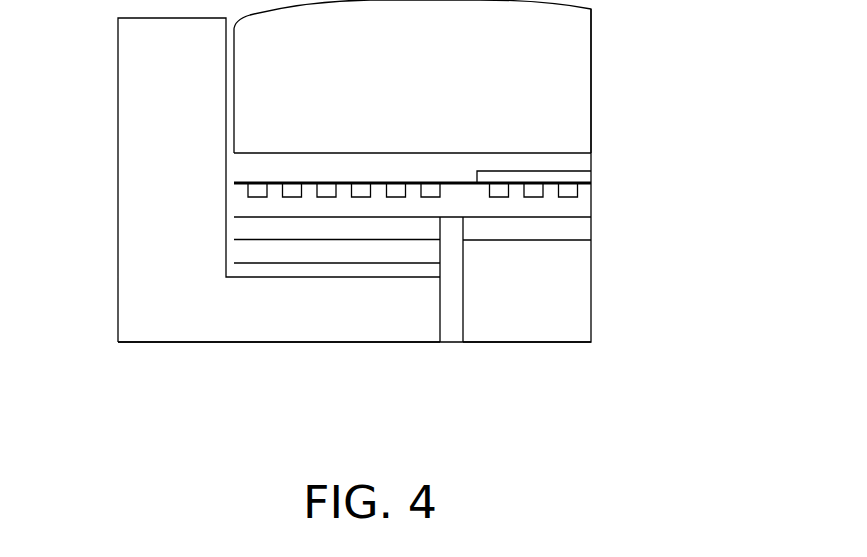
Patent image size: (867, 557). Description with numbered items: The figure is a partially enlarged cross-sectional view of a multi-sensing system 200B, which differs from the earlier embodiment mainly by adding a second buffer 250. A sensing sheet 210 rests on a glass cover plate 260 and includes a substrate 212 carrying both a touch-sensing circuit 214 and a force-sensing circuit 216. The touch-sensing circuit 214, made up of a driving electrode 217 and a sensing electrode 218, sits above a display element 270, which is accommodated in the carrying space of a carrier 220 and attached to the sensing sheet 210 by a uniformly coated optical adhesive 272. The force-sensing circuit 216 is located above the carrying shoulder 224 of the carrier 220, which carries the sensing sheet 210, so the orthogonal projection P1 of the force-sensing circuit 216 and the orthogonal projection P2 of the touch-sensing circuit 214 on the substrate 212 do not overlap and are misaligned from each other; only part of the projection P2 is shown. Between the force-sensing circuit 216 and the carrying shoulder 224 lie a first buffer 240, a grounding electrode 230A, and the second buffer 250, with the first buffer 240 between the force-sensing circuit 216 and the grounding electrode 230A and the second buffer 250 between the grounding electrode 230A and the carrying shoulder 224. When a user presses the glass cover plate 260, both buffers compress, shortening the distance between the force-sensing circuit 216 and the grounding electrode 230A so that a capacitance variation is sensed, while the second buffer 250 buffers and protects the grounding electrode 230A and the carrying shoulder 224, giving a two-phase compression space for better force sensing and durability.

The multi-sensing system 200B is at (763, 427).
The sensing sheet 210 is at (513, 167).
The substrate 212 is at (458, 182).
The touch-sensing circuit 214 is at (481, 175).
The force-sensing circuit 216 is at (440, 193).
The driving electrode 217 is at (572, 177).
The sensing electrode 218 is at (567, 190).
The carrier 220 is at (163, 307).
The carrying shoulder 224 is at (316, 307).
The grounding electrode 230A is at (250, 253).
The first buffer 240 is at (252, 229).
The second buffer 250 is at (253, 271).
The glass cover plate 260 is at (562, 44).
The display element 270 is at (552, 317).
The optical adhesive 272 is at (562, 228).
The orthogonal projection of the force-sensing circuit P1 is at (439, 137).
The orthogonal projection of the touch-sensing circuit P2 is at (591, 141).